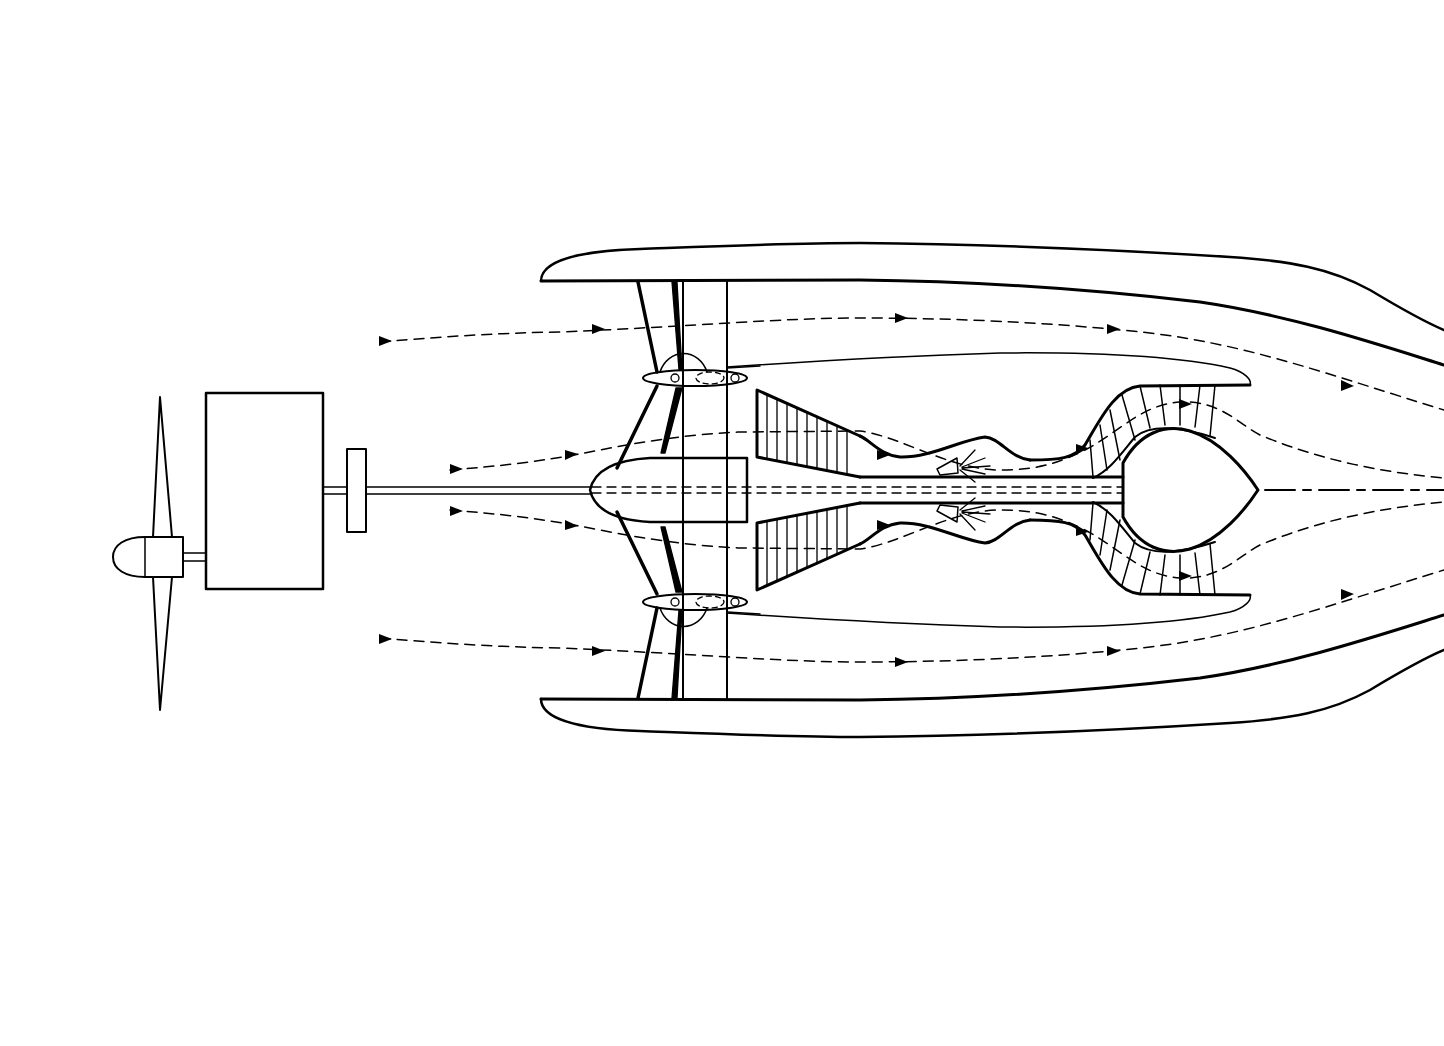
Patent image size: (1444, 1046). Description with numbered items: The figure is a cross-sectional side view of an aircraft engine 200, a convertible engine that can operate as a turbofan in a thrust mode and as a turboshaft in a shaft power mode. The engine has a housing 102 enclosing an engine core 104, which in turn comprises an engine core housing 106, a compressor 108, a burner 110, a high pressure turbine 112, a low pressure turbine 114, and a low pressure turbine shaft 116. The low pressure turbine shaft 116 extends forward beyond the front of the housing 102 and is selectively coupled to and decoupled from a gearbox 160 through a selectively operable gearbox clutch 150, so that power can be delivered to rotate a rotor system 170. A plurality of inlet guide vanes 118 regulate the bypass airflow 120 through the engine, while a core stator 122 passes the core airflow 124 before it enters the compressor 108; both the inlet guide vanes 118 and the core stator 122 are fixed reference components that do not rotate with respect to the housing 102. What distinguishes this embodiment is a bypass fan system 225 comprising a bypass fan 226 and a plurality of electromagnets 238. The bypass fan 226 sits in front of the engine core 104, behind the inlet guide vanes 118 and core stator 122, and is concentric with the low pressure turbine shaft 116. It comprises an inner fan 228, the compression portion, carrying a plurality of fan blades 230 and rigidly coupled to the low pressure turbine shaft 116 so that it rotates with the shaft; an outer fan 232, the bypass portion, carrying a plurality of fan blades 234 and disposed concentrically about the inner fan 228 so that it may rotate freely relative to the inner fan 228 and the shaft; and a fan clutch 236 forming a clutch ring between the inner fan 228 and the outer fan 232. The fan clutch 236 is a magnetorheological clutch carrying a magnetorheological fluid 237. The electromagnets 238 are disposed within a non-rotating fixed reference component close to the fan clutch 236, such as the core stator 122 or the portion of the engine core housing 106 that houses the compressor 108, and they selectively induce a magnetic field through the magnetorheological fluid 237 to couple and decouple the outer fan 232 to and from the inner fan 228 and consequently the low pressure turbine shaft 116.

The aircraft engine 200 is at (1150, 152).
The housing 102 is at (850, 243).
The engine core 104 is at (1005, 348).
The engine core housing 106 is at (850, 628).
The compressor 108 is at (822, 552).
The burner 110 is at (940, 532).
The high pressure turbine 112 is at (1115, 575).
The low pressure turbine 114 is at (1220, 585).
The low pressure turbine shaft 116 is at (413, 497).
The inlet guide vanes 118 is at (638, 292).
The bypass airflow 120 is at (460, 333).
The core stator 122 is at (632, 432).
The core airflow 124 is at (498, 462).
The gearbox clutch 150 is at (370, 466).
The gearbox 160 is at (263, 392).
The rotor system 170 is at (154, 478).
The bypass fan system 225 is at (746, 356).
The bypass fan 226 is at (740, 300).
The inner fan 228 is at (748, 418).
The fan blades 230 is at (660, 558).
The outer fan 232 is at (748, 668).
The fan blades 234 is at (743, 340).
The fan clutch 236 is at (657, 345).
The magnetorheological fluid 237 is at (708, 388).
The electromagnets 238 is at (648, 380).